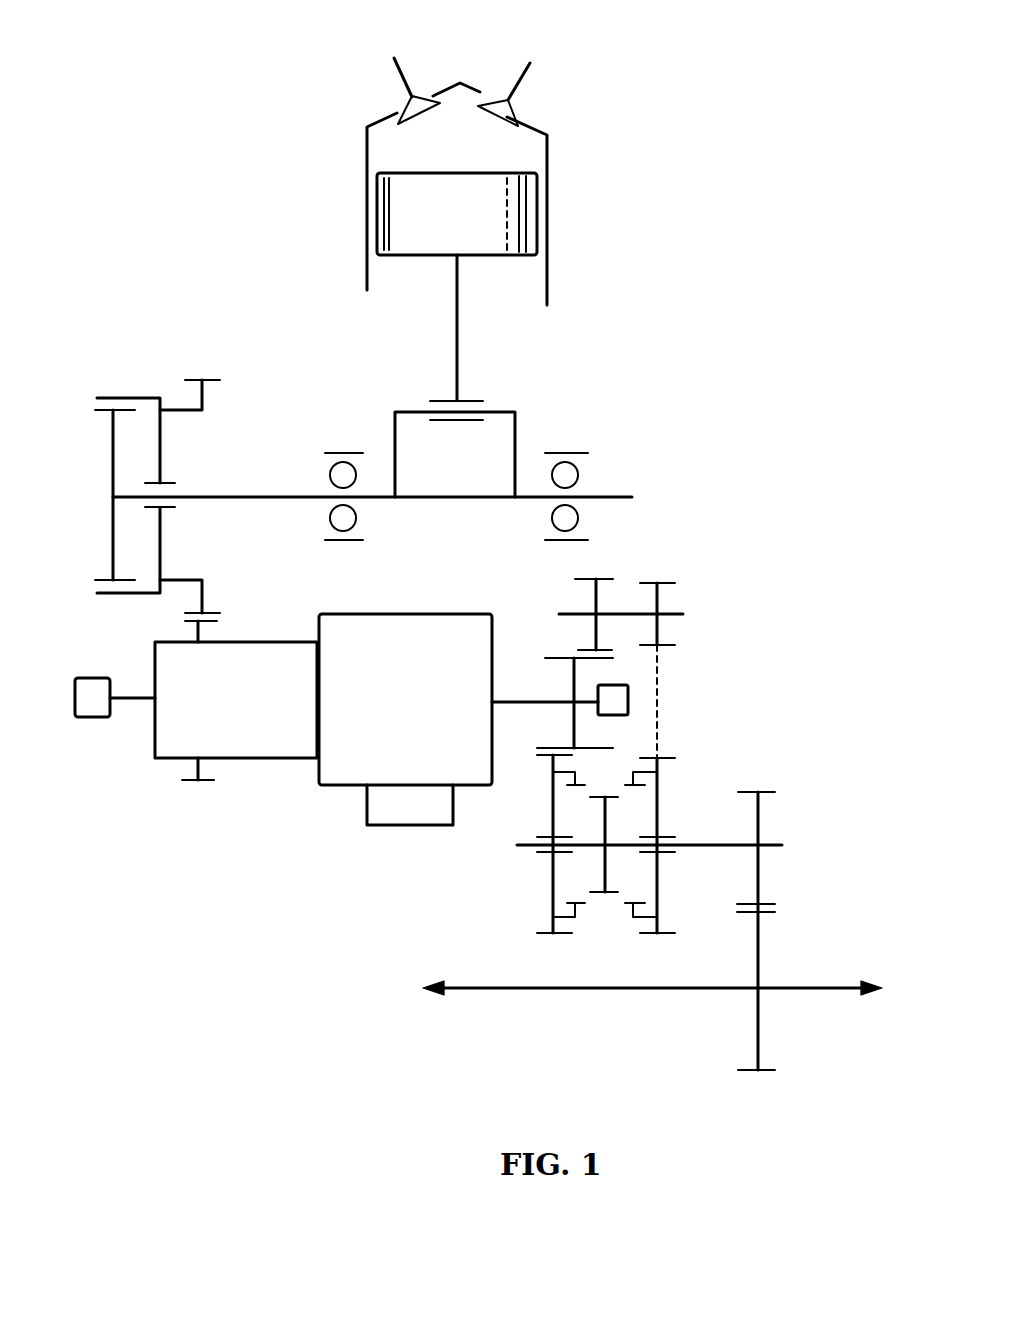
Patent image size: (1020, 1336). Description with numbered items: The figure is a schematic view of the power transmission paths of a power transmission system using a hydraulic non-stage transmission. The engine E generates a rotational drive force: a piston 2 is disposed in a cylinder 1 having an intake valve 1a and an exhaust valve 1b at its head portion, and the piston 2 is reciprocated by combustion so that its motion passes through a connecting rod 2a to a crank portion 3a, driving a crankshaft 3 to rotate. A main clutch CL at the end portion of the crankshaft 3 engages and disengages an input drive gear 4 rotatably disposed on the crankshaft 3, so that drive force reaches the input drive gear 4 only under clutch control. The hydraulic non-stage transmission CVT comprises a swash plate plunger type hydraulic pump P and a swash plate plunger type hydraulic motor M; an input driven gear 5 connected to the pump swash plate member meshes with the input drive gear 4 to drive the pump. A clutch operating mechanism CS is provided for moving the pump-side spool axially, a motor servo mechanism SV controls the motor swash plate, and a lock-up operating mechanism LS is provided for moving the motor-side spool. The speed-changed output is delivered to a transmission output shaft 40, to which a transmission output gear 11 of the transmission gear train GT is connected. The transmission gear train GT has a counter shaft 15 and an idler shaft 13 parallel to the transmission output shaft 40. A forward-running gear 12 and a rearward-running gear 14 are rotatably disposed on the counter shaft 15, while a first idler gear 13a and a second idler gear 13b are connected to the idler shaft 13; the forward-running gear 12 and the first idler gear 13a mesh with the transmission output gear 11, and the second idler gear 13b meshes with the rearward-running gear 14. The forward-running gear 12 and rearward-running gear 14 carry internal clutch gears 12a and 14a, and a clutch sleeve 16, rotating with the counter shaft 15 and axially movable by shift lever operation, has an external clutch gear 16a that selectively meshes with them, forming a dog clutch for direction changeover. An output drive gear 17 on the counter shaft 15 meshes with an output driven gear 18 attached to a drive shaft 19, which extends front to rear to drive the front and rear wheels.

The engine E is at (580, 202).
The cylinder 1 is at (550, 272).
The intake valve 1a is at (526, 72).
The exhaust valve 1b is at (399, 67).
The piston 2 is at (466, 232).
The connecting rod 2a is at (459, 323).
The crankshaft 3 is at (265, 495).
The crank portion 3a is at (495, 410).
The main clutch CL is at (84, 430).
The input drive gear 4 is at (205, 378).
The input driven gear 5 is at (207, 782).
The swash plate plunger type hydraulic pump P is at (247, 712).
The clutch operating mechanism CS is at (95, 718).
The swash plate plunger type hydraulic motor M is at (421, 708).
The motor servo mechanism SV is at (397, 813).
The hydraulic non-stage transmission CVT is at (273, 859).
The transmission output shaft 40 is at (522, 700).
The transmission output gear 11 is at (554, 655).
The lock-up operating mechanism LS is at (630, 697).
The idler shaft 13 is at (676, 612).
The first idler gear 13a is at (603, 576).
The second idler gear 13b is at (666, 580).
The transmission gear train GT is at (703, 741).
The clutch sleeve 16 is at (600, 816).
The external clutch gear 16a is at (606, 895).
The rearward-running gear 14 is at (665, 935).
The internal clutch gear 14a is at (643, 903).
The counter shaft 15 is at (700, 843).
The forward-running gear 12 is at (547, 935).
The internal clutch gear 12a is at (567, 901).
The output drive gear 17 is at (772, 790).
The output driven gear 18 is at (752, 1072).
The drive shaft 19 is at (690, 994).